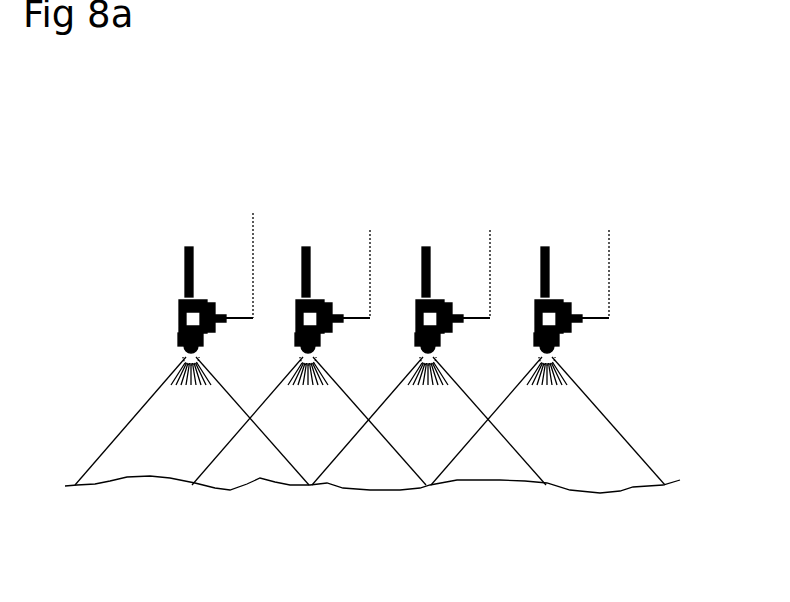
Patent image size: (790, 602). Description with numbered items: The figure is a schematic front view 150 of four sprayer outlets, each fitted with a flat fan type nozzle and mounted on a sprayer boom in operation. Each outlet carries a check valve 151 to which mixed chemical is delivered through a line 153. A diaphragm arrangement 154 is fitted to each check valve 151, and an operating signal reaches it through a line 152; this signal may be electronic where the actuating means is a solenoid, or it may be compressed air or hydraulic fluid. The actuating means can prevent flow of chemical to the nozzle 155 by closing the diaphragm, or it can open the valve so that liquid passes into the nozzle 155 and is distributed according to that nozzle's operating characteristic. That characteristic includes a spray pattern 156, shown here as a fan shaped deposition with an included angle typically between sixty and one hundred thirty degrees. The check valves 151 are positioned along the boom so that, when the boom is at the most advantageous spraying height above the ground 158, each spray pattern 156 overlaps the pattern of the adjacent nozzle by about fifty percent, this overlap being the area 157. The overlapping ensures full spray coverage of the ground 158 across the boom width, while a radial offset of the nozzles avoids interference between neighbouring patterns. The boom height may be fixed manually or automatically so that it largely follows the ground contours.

The front view 150 is at (331, 104).
The check valve 151 is at (342, 266).
The line 152 is at (427, 232).
The line 153 is at (196, 234).
The diaphragm arrangement 154 is at (219, 278).
The nozzle 155 is at (336, 359).
The spray pattern 156 is at (135, 495).
The overlap area 157 is at (250, 500).
The ground 158 is at (379, 502).